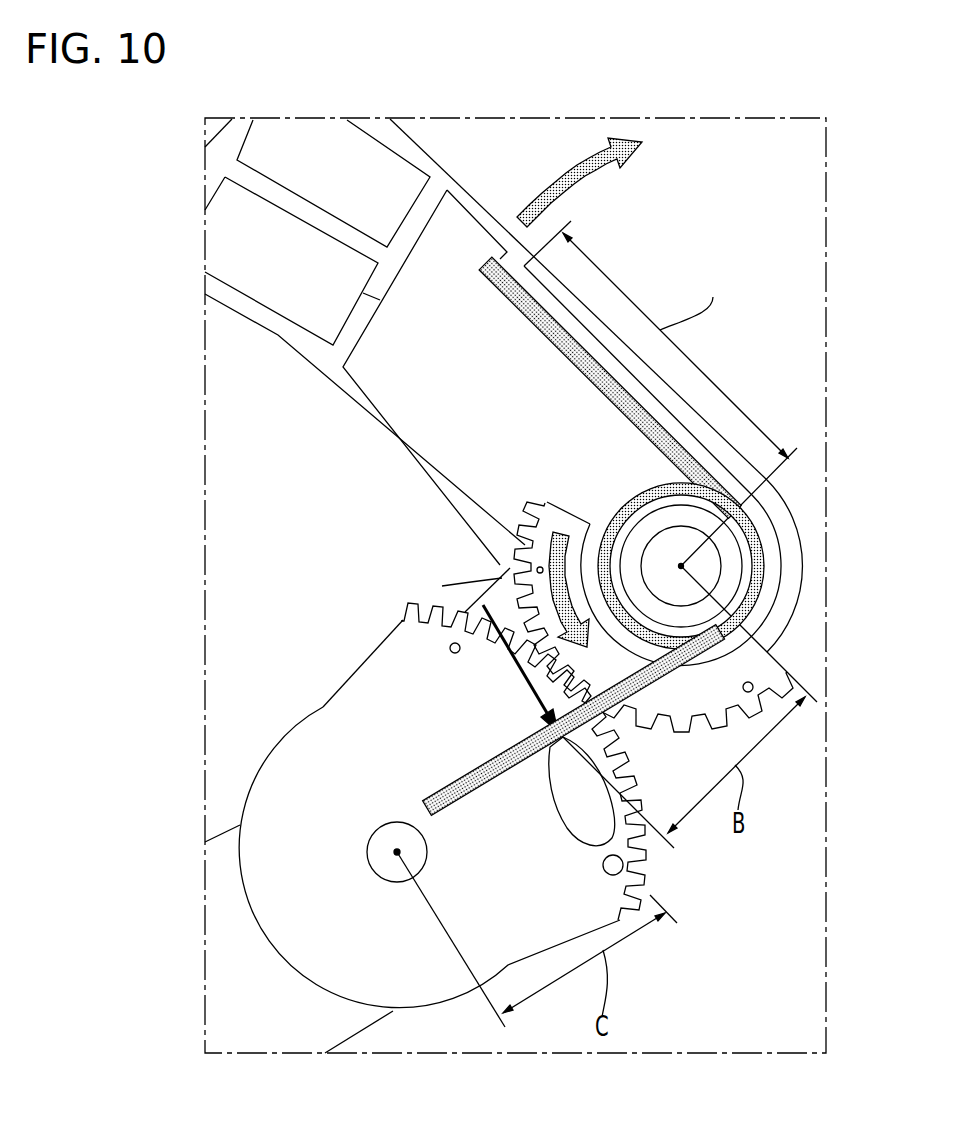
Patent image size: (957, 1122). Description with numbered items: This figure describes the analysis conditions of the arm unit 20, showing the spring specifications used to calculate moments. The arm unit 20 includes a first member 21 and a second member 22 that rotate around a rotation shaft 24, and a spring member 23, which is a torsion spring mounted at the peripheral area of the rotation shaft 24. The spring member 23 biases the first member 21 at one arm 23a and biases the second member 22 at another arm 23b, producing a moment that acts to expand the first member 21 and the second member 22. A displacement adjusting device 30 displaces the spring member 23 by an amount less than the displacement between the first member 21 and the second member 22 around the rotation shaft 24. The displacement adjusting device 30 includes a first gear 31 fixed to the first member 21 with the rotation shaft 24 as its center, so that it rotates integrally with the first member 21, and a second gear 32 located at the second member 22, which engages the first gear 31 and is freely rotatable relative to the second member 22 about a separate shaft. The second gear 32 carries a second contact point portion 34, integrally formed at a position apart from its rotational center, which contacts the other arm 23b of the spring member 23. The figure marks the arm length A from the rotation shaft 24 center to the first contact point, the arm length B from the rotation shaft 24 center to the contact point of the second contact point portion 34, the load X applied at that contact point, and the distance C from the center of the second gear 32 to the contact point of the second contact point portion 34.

The arm unit 20 is at (264, 390).
The first member 21 is at (585, 300).
The second member 22 is at (652, 765).
The spring member 23 is at (758, 525).
The one arm 23a is at (532, 323).
The other arm 23b is at (500, 740).
The rotation shaft 24 is at (745, 560).
The displacement adjusting device 30 is at (442, 703).
The first gear 31 is at (563, 492).
The second gear 32 is at (353, 677).
The second contact point portion 34 is at (553, 808).